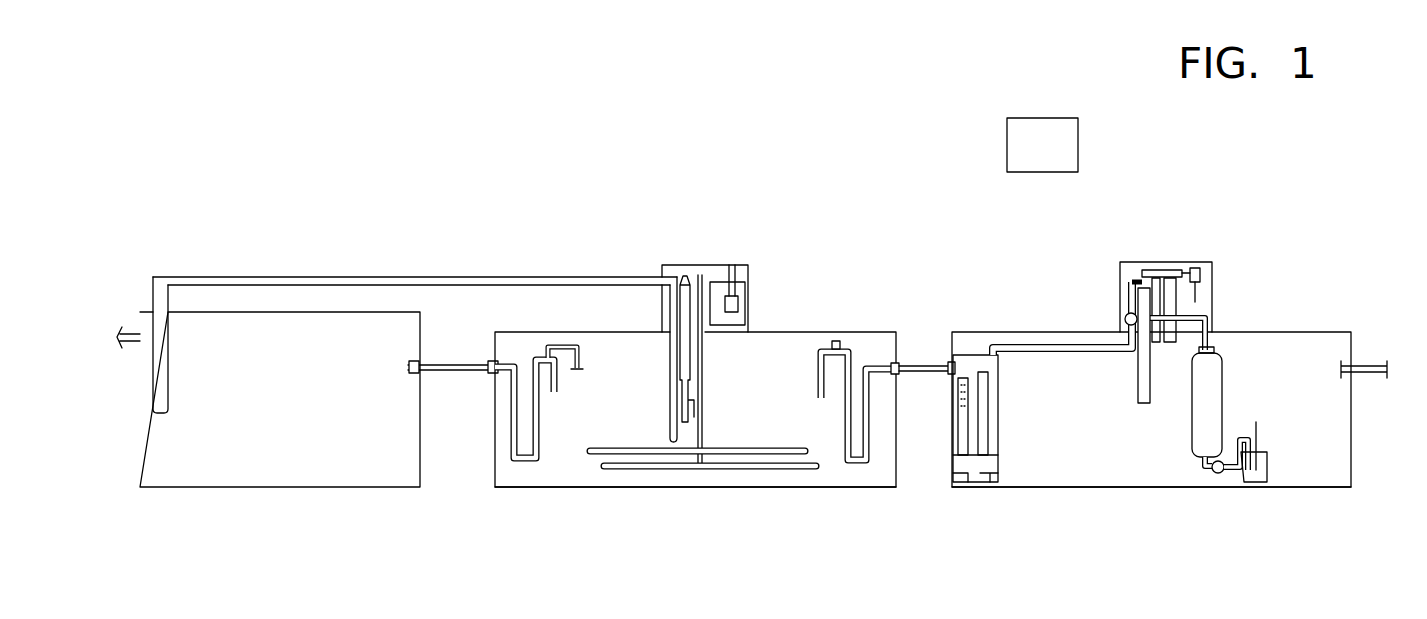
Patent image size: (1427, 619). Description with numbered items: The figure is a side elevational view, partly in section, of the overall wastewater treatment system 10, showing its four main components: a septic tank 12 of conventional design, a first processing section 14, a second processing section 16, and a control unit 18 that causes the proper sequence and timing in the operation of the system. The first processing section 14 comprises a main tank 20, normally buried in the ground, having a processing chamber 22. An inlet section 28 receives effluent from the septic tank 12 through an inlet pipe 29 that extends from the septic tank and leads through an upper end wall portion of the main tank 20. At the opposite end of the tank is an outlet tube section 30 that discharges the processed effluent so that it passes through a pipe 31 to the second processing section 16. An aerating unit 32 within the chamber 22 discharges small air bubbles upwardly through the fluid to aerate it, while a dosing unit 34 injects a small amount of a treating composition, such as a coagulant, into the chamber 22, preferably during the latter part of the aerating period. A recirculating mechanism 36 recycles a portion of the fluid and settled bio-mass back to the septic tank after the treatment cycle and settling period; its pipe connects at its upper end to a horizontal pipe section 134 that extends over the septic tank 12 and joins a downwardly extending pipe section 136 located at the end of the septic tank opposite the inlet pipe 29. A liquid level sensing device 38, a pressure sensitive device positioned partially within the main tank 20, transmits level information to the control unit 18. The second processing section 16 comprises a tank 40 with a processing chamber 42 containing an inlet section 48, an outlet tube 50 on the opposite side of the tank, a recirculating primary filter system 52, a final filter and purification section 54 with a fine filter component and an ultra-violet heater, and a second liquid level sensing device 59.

The system 10 is at (862, 140).
The septic tank 12 is at (345, 492).
The first processing section 14 is at (823, 313).
The second processing section 16 is at (1265, 317).
The control unit 18 is at (1080, 153).
The main tank 20 is at (855, 332).
The processing chamber 22 is at (835, 478).
The inlet section 28 is at (512, 435).
The inlet pipe 29 is at (475, 372).
The outlet tube section 30 is at (840, 423).
The pipe 31 is at (930, 363).
The aerating unit 32 is at (712, 442).
The dosing unit 34 is at (740, 296).
The recirculating mechanism 36 is at (668, 393).
The liquid level sensing device 38 is at (680, 355).
The tank 40 is at (1295, 327).
The processing chamber 42 is at (1300, 475).
The inlet section 48 is at (1002, 412).
The outlet tube 50 is at (1367, 372).
The recirculating primary filter system 52 is at (1228, 410).
The final filter and purification section 54 is at (1213, 290).
The liquid level sensing device 59 is at (1140, 382).
The horizontal pipe section 134 is at (447, 278).
The downwardly extending pipe section 136 is at (160, 385).